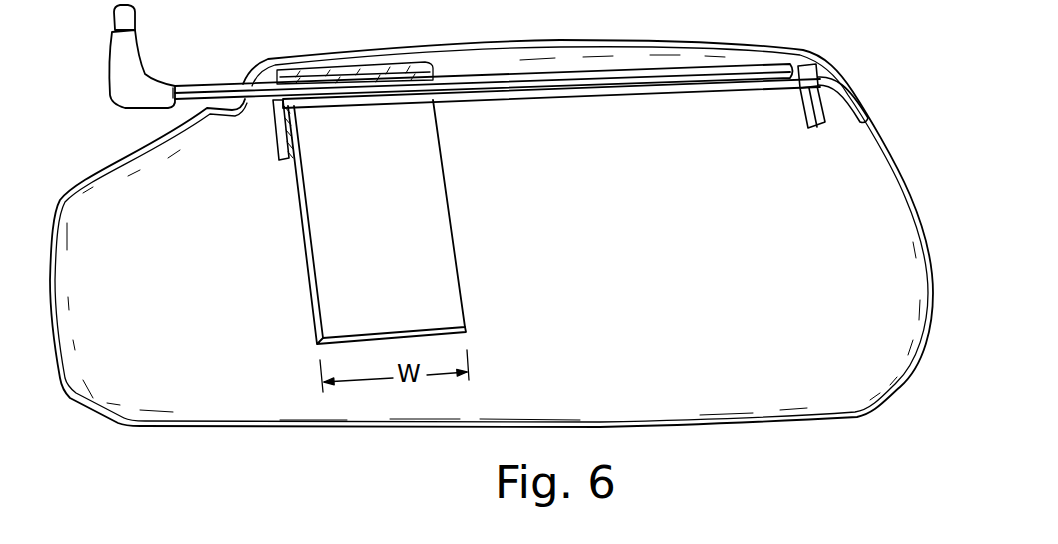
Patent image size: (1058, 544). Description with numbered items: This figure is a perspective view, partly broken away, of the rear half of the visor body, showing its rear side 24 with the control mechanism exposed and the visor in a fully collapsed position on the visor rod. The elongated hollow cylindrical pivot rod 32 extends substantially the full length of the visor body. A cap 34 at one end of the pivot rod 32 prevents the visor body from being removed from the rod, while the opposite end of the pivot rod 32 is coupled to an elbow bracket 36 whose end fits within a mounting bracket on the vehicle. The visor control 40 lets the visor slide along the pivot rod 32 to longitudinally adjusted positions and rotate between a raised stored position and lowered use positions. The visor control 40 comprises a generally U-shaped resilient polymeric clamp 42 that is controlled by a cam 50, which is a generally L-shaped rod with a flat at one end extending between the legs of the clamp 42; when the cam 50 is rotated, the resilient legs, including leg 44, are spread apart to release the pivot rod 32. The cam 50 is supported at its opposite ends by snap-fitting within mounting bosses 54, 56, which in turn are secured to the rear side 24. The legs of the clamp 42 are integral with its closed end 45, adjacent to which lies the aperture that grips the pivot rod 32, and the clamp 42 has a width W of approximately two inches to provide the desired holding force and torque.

The rear side 24 is at (890, 213).
The pivot rod 32 is at (227, 84).
The cap 34 is at (805, 51).
The elbow bracket 36 is at (140, 57).
The visor control 40 is at (598, 157).
The clamp 42 is at (452, 183).
The leg 44 is at (462, 273).
The closed end 45 is at (352, 63).
The cam 50 is at (652, 100).
The mounting boss 54 is at (275, 135).
The mounting boss 56 is at (800, 114).